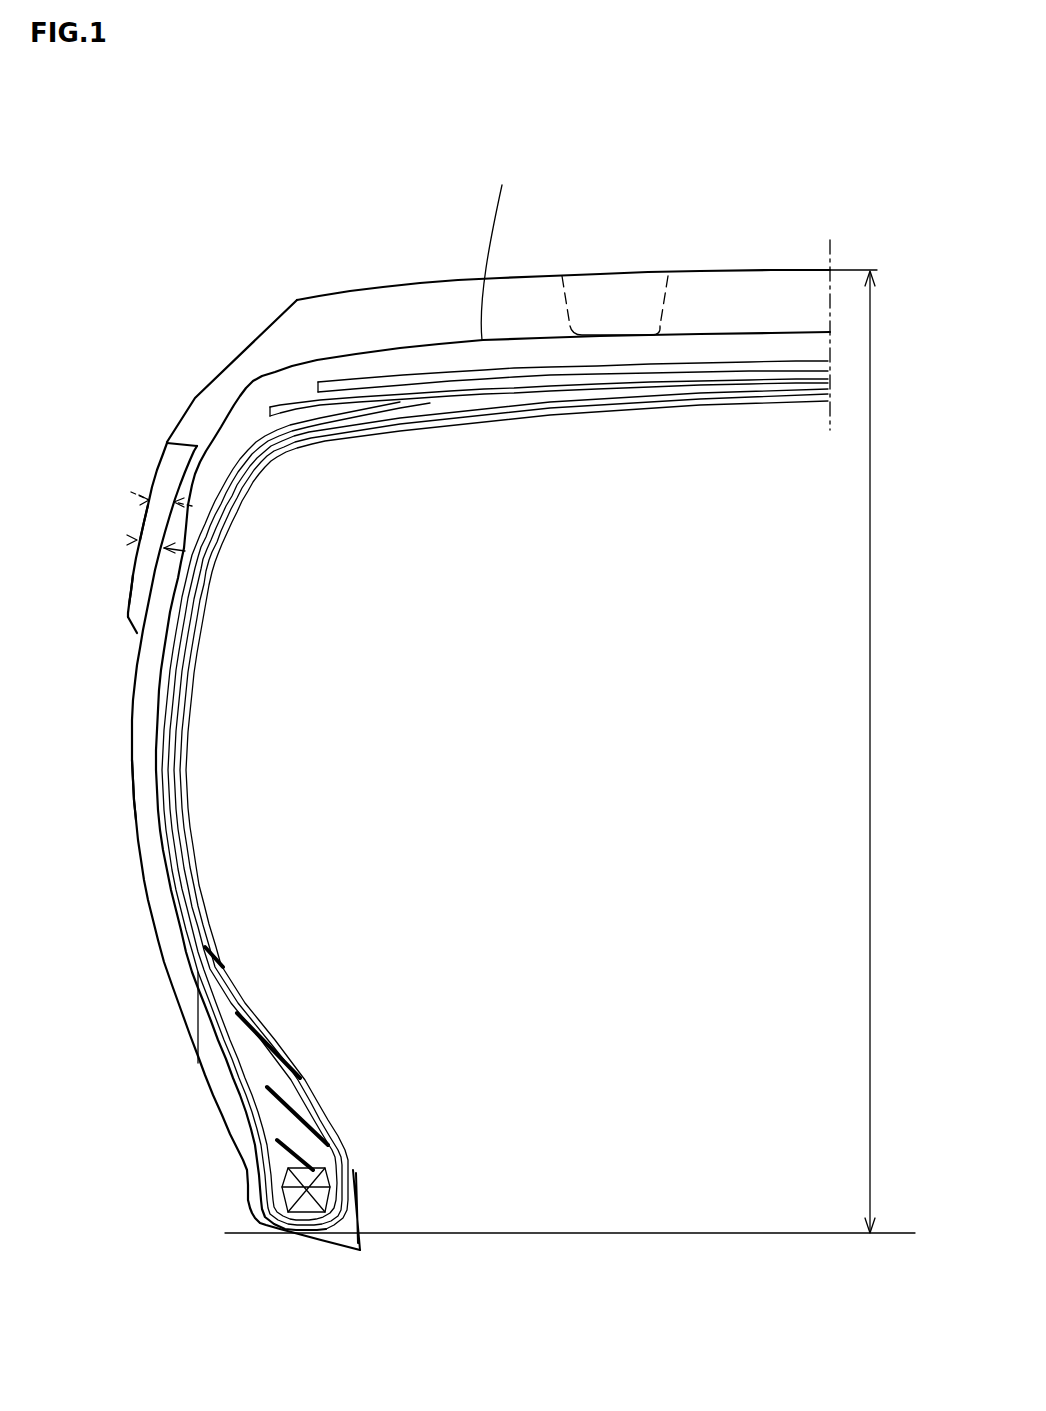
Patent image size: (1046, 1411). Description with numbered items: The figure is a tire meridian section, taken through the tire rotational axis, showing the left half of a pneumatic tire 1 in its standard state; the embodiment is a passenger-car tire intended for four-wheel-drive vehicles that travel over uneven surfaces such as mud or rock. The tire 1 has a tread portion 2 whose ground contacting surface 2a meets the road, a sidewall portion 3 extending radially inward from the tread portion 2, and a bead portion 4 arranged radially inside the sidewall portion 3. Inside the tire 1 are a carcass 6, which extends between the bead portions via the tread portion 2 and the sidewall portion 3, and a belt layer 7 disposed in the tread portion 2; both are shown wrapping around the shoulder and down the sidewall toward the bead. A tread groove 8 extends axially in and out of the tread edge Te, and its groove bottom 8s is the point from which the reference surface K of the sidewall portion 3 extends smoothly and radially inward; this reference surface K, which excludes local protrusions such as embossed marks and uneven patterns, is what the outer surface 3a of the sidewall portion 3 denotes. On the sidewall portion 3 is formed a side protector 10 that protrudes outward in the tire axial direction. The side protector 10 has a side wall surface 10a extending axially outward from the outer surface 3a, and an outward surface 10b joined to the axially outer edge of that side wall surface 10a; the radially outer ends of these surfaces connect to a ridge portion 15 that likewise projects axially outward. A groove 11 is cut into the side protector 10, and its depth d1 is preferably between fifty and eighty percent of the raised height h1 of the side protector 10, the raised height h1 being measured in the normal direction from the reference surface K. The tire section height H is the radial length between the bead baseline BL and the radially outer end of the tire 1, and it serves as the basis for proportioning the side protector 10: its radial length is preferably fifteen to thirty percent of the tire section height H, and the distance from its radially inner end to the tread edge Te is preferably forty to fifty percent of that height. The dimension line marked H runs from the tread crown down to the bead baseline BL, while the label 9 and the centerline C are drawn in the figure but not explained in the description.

The pneumatic tire 1 is at (128, 207).
The tread portion 2 is at (432, 211).
The ground contacting surface 2a is at (535, 273).
The sidewall portion 3 is at (85, 722).
The outer surface of the sidewall portion 3a is at (135, 682).
The bead portion 4 is at (180, 1094).
The carcass 6 is at (197, 865).
The belt layer 7 is at (558, 370).
The tread groove 8 is at (367, 327).
The groove bottom 8s is at (500, 247).
The belt portion 9 is at (397, 278).
The side protector 10 is at (143, 573).
The side wall surface 10a is at (137, 632).
The outward surface 10b is at (130, 592).
The groove 11 is at (158, 518).
The ridge portion 15 is at (162, 441).
The tread edge Te is at (297, 300).
The tire equator C is at (827, 318).
The tire section height H is at (865, 751).
The reference surface K is at (135, 795).
The bead baseline BL is at (490, 1232).
The depth of the groove d1 is at (163, 497).
The raised height of the side protector h1 is at (137, 540).